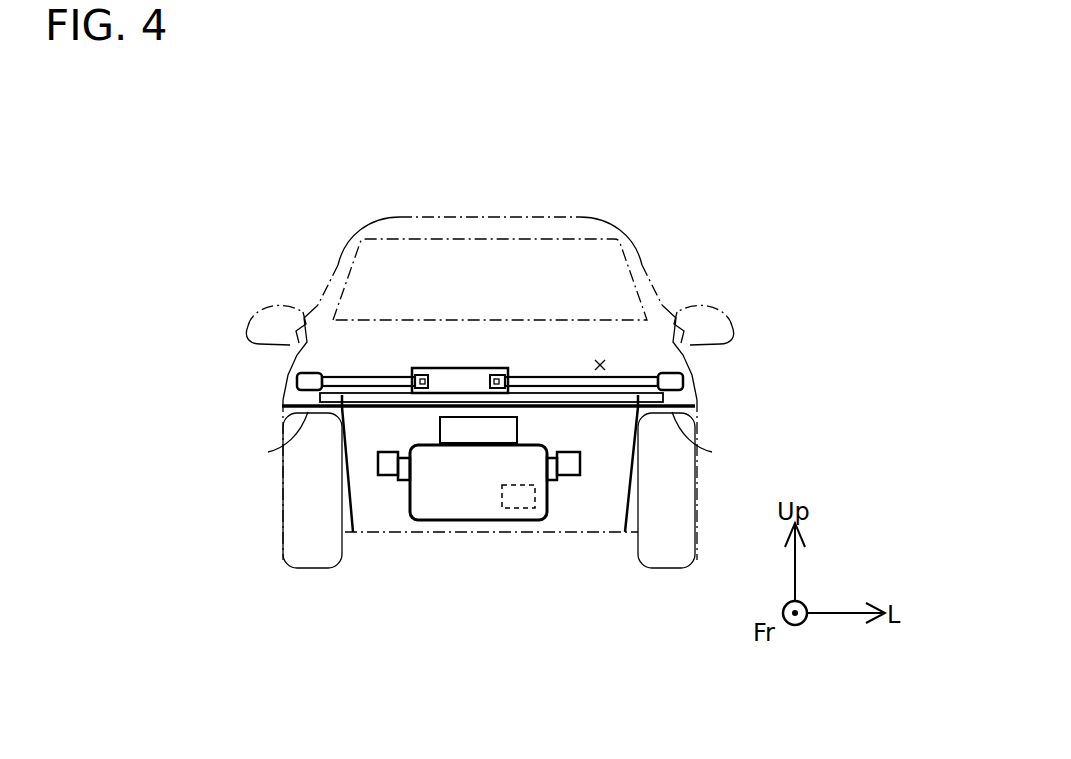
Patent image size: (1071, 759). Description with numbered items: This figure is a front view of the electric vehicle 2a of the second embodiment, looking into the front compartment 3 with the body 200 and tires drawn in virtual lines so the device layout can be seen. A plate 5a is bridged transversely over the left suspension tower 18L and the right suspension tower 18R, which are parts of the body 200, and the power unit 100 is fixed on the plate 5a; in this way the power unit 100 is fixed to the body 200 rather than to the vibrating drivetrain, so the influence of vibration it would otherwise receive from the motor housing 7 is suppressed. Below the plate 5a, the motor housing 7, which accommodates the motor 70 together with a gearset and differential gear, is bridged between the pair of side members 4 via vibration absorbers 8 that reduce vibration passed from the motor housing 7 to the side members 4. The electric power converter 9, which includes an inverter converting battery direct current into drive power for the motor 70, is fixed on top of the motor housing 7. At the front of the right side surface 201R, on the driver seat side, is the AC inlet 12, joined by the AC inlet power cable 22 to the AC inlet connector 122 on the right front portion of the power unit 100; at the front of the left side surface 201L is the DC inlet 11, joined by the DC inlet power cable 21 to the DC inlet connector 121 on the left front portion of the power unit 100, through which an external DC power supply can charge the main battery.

The electric vehicle 2a is at (232, 190).
The body 200 is at (634, 240).
The front compartment 3 is at (601, 362).
The right side surface 201R is at (287, 377).
The left side surface 201L is at (693, 377).
The right suspension tower 18R is at (268, 452).
The left suspension tower 18L is at (712, 452).
The plate 5a is at (354, 398).
The power unit 100 is at (448, 380).
The AC inlet connector 122 is at (427, 375).
The DC inlet connector 121 is at (497, 380).
The AC inlet power cable 22 is at (386, 385).
The DC inlet power cable 21 is at (567, 383).
The AC inlet 12 is at (295, 383).
The DC inlet 11 is at (686, 384).
The electric power converter 9 is at (462, 433).
The motor housing 7 is at (482, 496).
The motor 70 is at (520, 505).
The vibration absorber 8 is at (402, 477).
The side member 4 is at (383, 467).